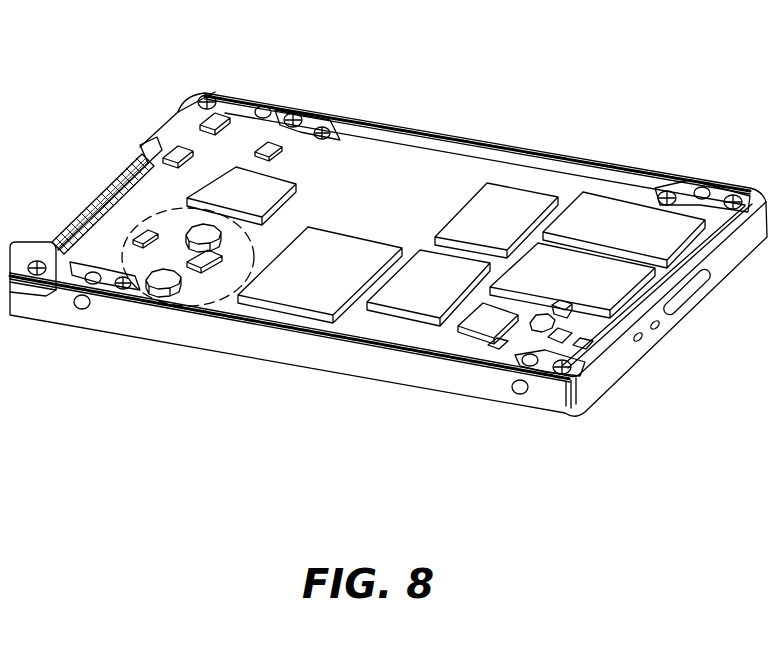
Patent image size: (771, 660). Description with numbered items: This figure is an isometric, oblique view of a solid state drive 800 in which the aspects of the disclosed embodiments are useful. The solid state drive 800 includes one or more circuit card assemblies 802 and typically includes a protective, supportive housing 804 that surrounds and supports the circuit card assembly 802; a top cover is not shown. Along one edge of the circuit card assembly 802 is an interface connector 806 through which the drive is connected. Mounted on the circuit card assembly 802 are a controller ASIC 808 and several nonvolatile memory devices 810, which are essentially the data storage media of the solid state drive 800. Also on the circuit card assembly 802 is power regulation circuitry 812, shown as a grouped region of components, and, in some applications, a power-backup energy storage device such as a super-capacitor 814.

The solid state drive 800 is at (536, 86).
The circuit card assembly 802 is at (443, 158).
The housing 804 is at (222, 352).
The interface connector 806 is at (121, 171).
The controller ASIC 808 is at (223, 187).
The nonvolatile memory device 810 is at (592, 273).
The power regulation circuitry 812 is at (201, 305).
The super-capacitor 814 is at (314, 282).